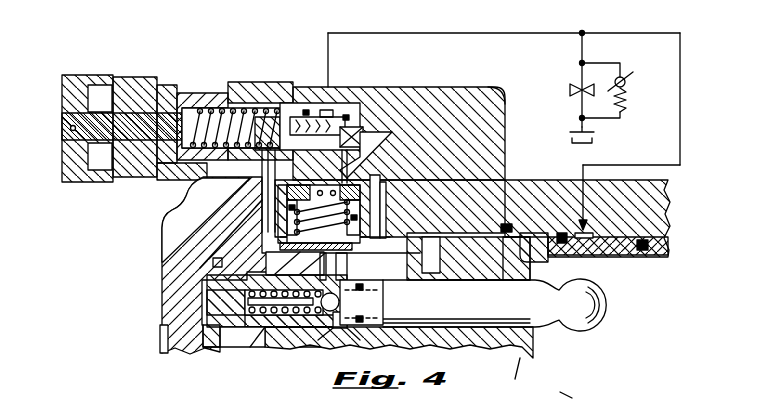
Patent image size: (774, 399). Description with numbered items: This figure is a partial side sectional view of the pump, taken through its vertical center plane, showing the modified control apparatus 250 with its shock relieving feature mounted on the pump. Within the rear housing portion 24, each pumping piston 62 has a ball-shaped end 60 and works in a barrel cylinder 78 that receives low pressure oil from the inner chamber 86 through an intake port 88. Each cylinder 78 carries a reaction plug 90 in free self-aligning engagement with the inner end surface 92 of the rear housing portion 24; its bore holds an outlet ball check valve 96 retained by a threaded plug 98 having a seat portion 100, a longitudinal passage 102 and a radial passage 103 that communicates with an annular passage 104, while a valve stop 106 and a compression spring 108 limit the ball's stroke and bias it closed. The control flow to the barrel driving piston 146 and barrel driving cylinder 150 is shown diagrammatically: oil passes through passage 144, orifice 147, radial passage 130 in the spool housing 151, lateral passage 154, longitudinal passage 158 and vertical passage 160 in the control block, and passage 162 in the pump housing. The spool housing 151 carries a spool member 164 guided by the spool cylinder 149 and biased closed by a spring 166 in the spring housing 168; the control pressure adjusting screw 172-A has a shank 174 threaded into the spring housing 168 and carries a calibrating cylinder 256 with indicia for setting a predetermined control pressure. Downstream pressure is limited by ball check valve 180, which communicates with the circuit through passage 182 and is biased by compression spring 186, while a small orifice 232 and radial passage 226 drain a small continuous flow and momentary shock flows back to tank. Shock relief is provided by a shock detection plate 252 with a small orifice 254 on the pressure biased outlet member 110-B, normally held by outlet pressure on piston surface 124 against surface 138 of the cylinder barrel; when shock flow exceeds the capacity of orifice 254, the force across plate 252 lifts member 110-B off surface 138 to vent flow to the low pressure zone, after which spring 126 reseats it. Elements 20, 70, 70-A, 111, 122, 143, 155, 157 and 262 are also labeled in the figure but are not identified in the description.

The main body 20 is at (672, 199).
The rear housing portion 24 is at (162, 240).
The ball-shaped end 60 is at (596, 299).
The pumping piston 62 is at (535, 330).
The housing block 70 is at (443, 246).
The housing portion 70-A is at (524, 378).
The barrel cylinder 78 is at (502, 270).
The inner chamber 86 is at (587, 141).
The intake port 88 is at (460, 275).
The reaction plug 90 is at (206, 283).
The inner end surface 92 is at (207, 302).
The outlet ball check valve 96 is at (322, 318).
The threaded plug 98 is at (397, 320).
The seat portion 100 is at (345, 310).
The longitudinal passage 102 is at (342, 333).
The radial passage 103 is at (314, 340).
The annular passage 104 is at (290, 340).
The valve stop 106 is at (243, 300).
The compression spring 108 is at (235, 348).
The pressure biased outlet member 110-B is at (372, 210).
The filter assembly 111 is at (318, 187).
The piston 122 is at (384, 290).
The piston surface 124 is at (285, 205).
The spring 126 is at (380, 226).
The radial passage 130 is at (338, 116).
The surface 138 is at (424, 262).
The bore 143 is at (210, 348).
The passage 144 is at (380, 156).
The barrel driving piston 146 is at (650, 243).
The orifice 147 is at (363, 122).
The spool cylinder 149 is at (342, 149).
The barrel driving cylinder 150 is at (585, 254).
The spool housing 151 is at (293, 110).
The lateral passage 154 is at (328, 40).
The connection 155 is at (545, 235).
The flange 157 is at (525, 262).
The longitudinal passage 158 is at (455, 33).
The vertical passage 160 is at (682, 90).
The passage 162 is at (608, 165).
The spool member 164 is at (258, 100).
The spring 166 is at (188, 172).
The spring housing 168 is at (190, 93).
The control pressure adjusting screw 172-A is at (76, 102).
The shank 174 is at (64, 147).
The ball check valve 180 is at (283, 247).
The passage 182 is at (583, 50).
The compression spring 186 is at (628, 100).
The radial passage 226 is at (600, 133).
The small orifice 232 is at (568, 96).
The modified control apparatus 250 is at (508, 85).
The shock detection plate 252 is at (392, 256).
The orifice 254 is at (268, 265).
The calibrating cylinder 256 is at (132, 76).
The member 262 is at (585, 394).